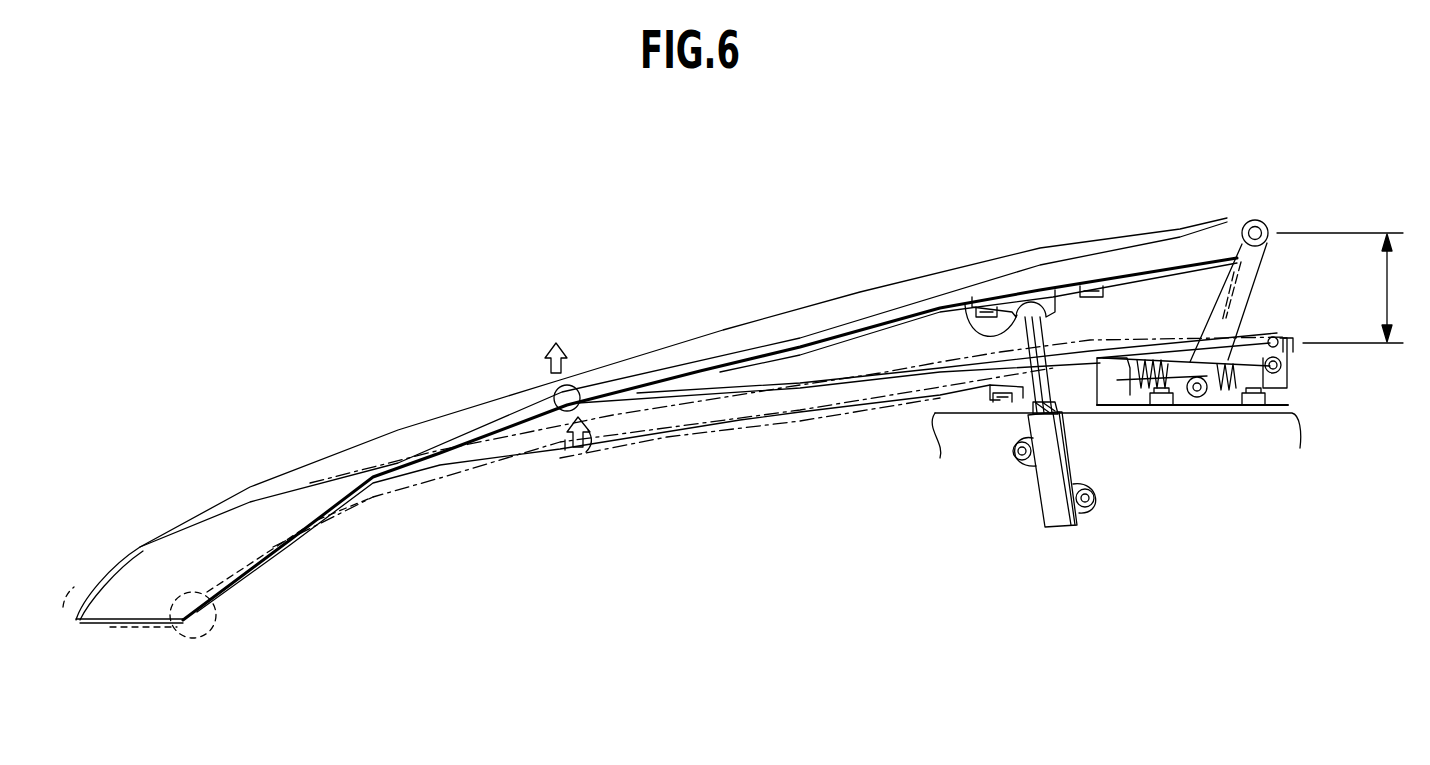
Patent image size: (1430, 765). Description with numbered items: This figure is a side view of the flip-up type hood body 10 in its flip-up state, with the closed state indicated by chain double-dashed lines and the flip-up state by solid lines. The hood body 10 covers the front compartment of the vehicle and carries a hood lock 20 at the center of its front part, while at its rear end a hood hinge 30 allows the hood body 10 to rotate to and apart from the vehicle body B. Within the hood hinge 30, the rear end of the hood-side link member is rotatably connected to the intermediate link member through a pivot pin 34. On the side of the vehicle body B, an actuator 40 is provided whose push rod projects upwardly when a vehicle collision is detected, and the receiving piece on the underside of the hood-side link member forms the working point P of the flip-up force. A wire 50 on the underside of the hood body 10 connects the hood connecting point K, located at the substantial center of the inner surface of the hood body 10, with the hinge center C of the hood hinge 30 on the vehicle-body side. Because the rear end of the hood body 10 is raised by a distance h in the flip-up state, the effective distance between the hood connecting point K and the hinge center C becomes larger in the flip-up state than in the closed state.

The hood body 10 is at (797, 333).
The hood lock 20 is at (210, 627).
The hood hinge 30 is at (1293, 388).
The pivot pin 34 is at (1258, 220).
The actuator 40 is at (1032, 507).
The wire 50 is at (713, 392).
The hood connecting point K is at (578, 385).
The working point P is at (965, 305).
The hinge center C is at (1278, 340).
The vehicle body B is at (1270, 437).
The distance h is at (1345, 288).